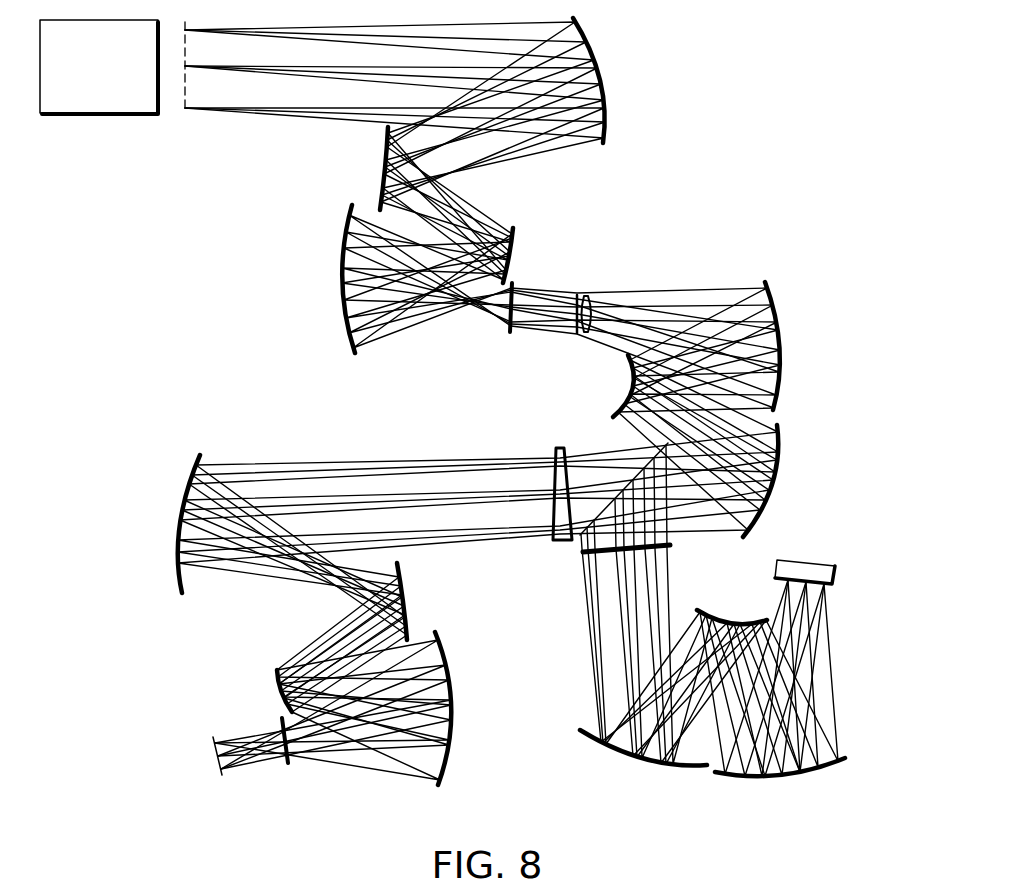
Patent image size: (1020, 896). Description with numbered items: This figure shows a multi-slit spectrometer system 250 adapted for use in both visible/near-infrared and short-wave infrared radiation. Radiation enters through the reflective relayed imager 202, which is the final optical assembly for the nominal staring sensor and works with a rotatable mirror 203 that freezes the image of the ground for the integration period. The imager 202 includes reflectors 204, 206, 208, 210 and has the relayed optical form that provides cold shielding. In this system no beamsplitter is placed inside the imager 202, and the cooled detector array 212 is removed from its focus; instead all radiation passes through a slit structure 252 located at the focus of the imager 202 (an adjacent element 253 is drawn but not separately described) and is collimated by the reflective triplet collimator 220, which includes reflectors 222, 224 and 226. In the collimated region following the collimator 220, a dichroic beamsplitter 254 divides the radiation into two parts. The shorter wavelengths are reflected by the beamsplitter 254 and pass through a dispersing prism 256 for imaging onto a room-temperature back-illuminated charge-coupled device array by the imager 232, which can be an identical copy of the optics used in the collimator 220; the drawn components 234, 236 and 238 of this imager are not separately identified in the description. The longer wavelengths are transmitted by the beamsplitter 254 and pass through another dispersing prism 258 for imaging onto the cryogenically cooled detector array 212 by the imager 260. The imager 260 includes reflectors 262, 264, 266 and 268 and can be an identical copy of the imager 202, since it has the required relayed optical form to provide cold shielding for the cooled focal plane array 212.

The reflective relayed imager 202 is at (419, 180).
The rotatable mirror 203 is at (88, 114).
The reflector 204 is at (594, 40).
The reflector 206 is at (385, 150).
The reflector 208 is at (516, 240).
The reflector 210 is at (340, 270).
The cryogenically cooled detector array 212 is at (211, 745).
The reflective triplet collimator 220 is at (662, 409).
The reflector 222 is at (782, 322).
The reflector 224 is at (624, 375).
The reflector 226 is at (784, 463).
The imager 232 is at (753, 679).
The camera primary mirror 234 is at (620, 752).
The camera secondary mirror 236 is at (731, 613).
The camera tertiary mirror 238 is at (806, 772).
The multi-slit spectrometer system 250 is at (365, 288).
The slit structure 252 is at (575, 300).
The field lens 253 is at (590, 293).
The dichroic beamsplitter 254 is at (633, 461).
The dispersing prism 256 is at (674, 548).
The dispersing prism 258 is at (558, 541).
The imager 260 is at (310, 625).
The reflector 262 is at (190, 494).
The reflector 264 is at (408, 598).
The reflector 266 is at (280, 685).
The reflector 268 is at (455, 692).